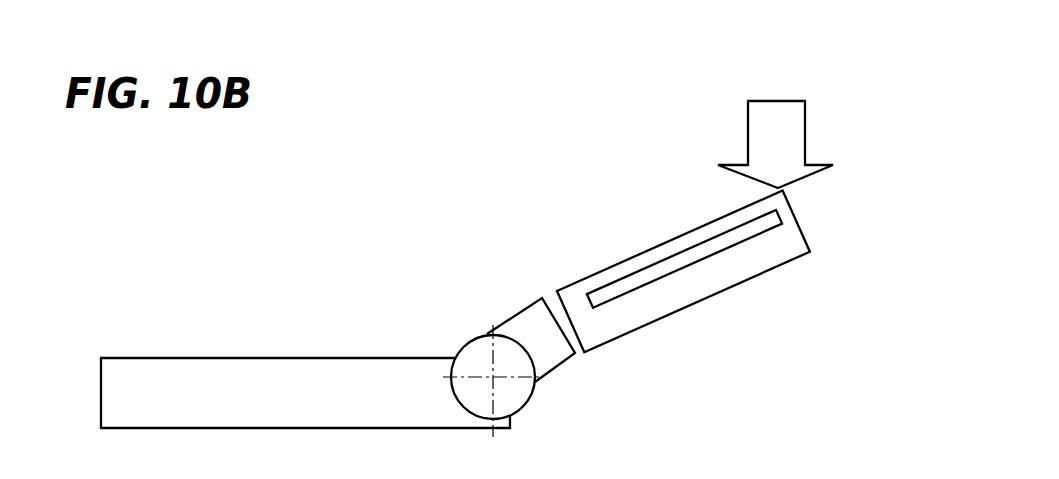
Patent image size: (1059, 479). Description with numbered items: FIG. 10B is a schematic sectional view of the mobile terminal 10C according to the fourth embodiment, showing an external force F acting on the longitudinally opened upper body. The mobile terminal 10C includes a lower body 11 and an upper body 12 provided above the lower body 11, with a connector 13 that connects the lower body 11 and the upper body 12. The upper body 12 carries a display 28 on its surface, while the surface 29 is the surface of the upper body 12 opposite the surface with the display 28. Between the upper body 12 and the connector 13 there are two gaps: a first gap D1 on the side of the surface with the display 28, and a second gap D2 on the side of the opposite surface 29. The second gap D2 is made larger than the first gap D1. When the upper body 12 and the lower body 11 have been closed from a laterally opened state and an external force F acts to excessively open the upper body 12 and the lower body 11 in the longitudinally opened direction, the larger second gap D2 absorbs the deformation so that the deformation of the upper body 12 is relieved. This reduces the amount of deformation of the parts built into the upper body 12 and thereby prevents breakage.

The mobile terminal 10C is at (385, 145).
The lower body 11 is at (203, 354).
The upper body 12 is at (694, 312).
The connector 13 is at (467, 323).
The display 28 is at (662, 240).
The surface 29 is at (753, 278).
The first gap D1 is at (548, 296).
The second gap D2 is at (584, 354).
The external force F is at (793, 127).